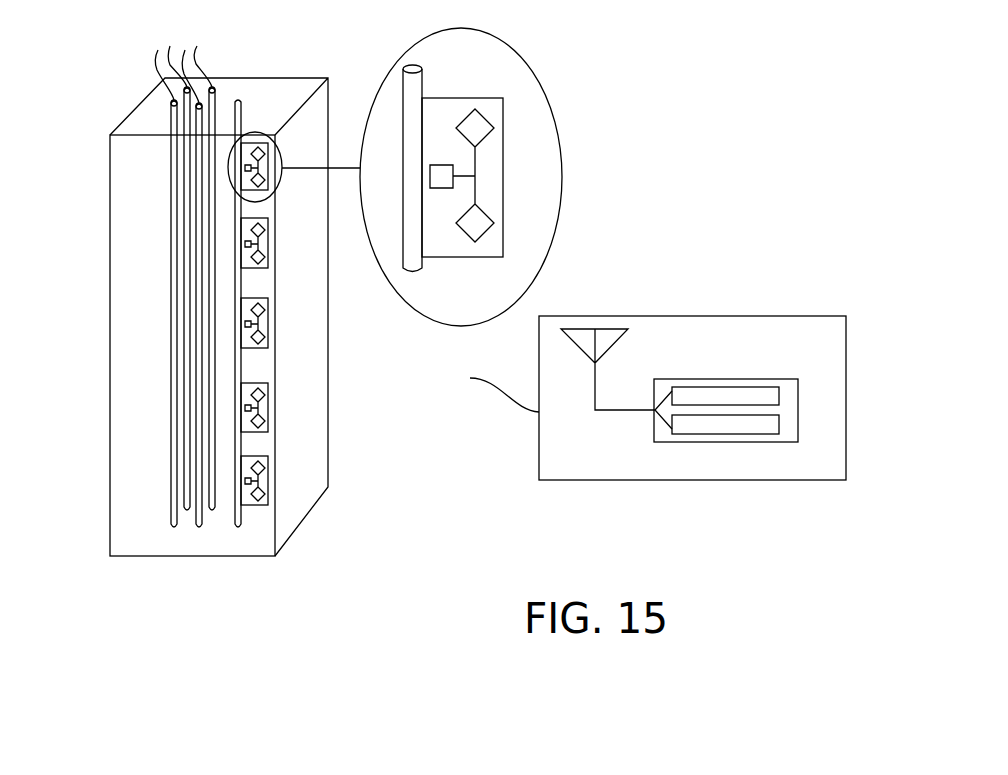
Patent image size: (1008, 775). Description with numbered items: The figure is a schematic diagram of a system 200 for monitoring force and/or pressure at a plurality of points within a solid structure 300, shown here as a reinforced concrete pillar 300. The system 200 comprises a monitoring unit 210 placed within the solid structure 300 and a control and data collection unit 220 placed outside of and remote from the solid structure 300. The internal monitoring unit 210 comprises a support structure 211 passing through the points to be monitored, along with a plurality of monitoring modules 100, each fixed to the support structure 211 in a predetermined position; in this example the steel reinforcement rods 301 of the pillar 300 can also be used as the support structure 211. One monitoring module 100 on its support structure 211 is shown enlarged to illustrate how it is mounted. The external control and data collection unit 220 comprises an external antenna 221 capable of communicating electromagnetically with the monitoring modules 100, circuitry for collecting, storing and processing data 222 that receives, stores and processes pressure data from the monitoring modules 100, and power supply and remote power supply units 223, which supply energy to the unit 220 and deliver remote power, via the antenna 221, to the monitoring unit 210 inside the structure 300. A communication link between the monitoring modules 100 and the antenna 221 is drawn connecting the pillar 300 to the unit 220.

The monitoring module 100 is at (264, 178).
The system for monitoring force and/or pressure 200 is at (240, 368).
The monitoring unit 210 is at (238, 455).
The support structure 211 is at (412, 91).
The control and data collection unit 220 is at (715, 322).
The external antenna 221 is at (628, 413).
The circuitry for collecting, storing and processing data 222 is at (725, 396).
The power supply and remote power supply units 223 is at (725, 424).
The solid structure 300 is at (128, 165).
The steel reinforcement rods 301 is at (178, 64).